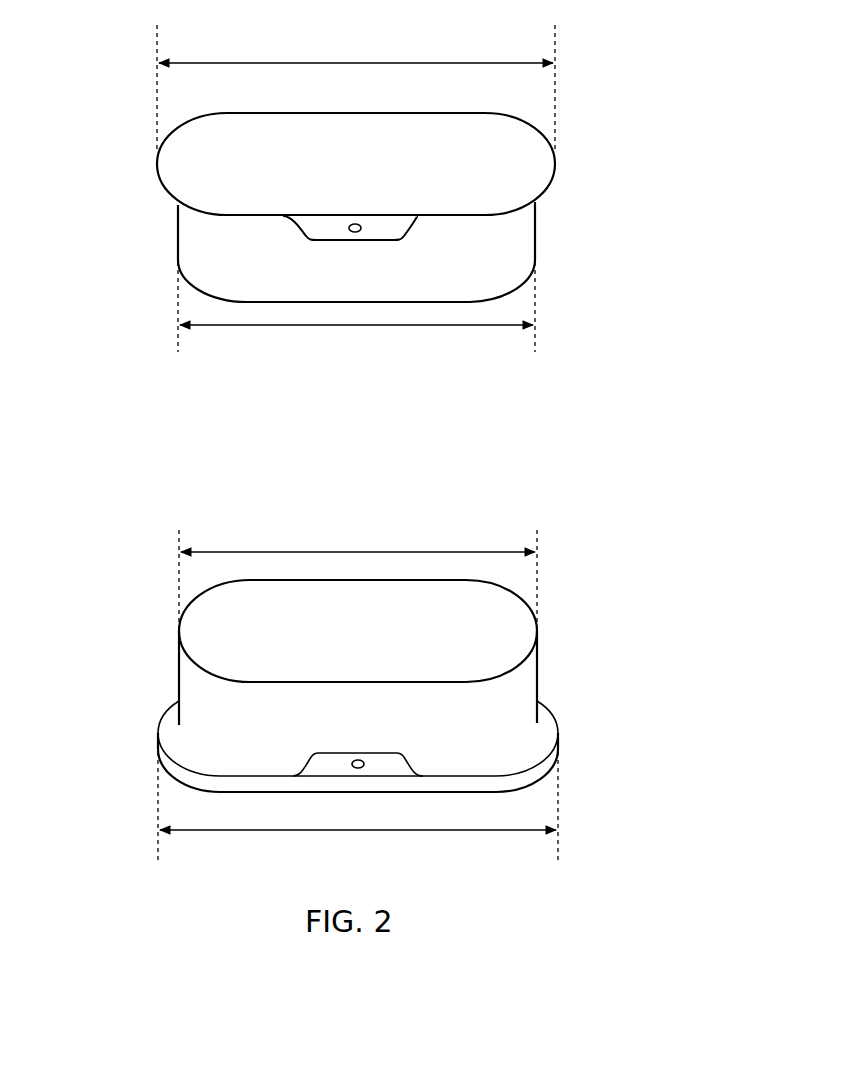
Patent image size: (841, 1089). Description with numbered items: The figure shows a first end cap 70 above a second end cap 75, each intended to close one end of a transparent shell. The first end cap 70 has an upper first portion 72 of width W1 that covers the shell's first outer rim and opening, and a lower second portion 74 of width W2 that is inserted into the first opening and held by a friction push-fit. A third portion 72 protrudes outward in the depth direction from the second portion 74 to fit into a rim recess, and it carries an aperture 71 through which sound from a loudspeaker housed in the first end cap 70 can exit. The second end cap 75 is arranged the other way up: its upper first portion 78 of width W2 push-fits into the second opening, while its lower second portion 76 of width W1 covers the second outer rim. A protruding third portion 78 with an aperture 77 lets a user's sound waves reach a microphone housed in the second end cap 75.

The first end cap 70 is at (424, 190).
The aperture 71 is at (360, 222).
The first portion 72 is at (204, 119).
The second portion 74 is at (538, 220).
The second end cap 75 is at (327, 691).
The second portion 76 is at (553, 757).
The aperture 77 is at (364, 760).
The first portion 78 is at (540, 676).